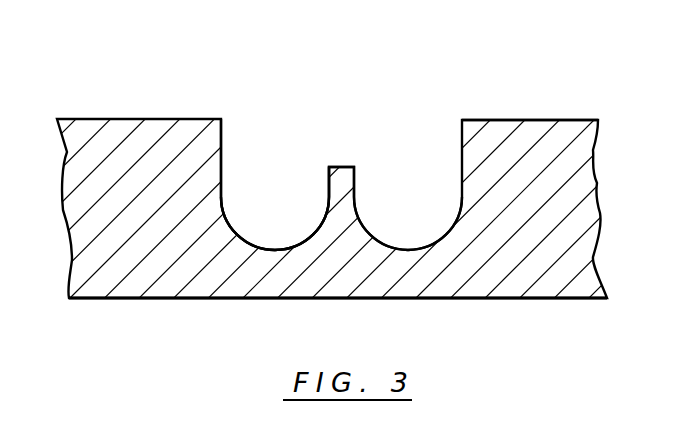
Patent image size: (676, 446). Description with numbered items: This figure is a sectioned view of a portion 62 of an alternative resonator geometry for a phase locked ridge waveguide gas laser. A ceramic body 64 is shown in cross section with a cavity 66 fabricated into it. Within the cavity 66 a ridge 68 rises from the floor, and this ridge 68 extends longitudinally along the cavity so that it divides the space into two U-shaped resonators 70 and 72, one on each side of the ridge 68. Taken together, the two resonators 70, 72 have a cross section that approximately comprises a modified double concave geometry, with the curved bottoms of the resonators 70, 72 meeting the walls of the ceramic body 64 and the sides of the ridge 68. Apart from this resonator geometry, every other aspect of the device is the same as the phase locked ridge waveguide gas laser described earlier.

The portion of alternative resonator geometry 62 is at (410, 65).
The ceramic body 64 is at (535, 120).
The cavity 66 is at (305, 156).
The ridge 68 is at (345, 167).
The U-shaped resonator 70 is at (285, 234).
The U-shaped resonator 72 is at (419, 234).